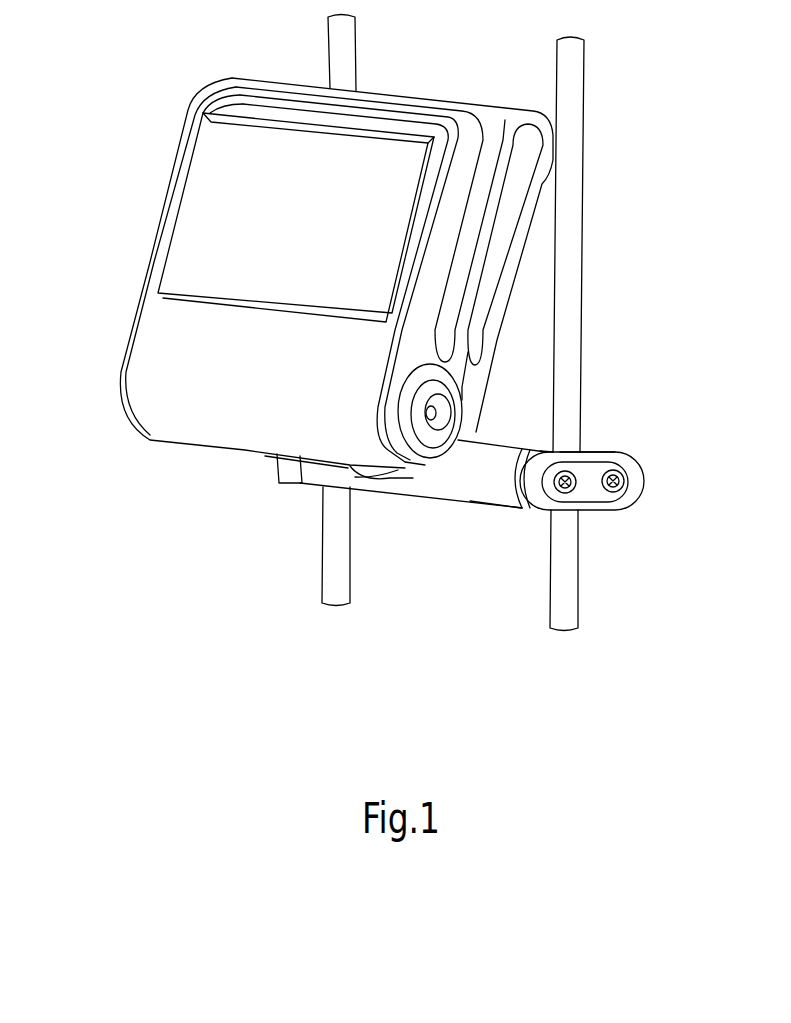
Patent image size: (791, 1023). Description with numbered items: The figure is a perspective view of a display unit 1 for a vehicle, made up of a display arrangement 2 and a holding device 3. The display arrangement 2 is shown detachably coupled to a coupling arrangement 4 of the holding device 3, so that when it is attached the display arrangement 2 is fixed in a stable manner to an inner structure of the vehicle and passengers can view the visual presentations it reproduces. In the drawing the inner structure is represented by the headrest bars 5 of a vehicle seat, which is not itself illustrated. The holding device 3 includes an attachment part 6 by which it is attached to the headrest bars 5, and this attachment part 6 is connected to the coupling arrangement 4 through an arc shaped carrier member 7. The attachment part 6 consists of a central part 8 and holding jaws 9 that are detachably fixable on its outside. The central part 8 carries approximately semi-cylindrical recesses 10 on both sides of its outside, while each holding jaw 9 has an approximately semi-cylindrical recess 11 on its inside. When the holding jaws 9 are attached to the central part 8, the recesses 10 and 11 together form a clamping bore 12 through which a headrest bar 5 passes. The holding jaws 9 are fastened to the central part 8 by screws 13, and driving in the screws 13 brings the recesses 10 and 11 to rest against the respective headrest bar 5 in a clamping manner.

The display unit 1 is at (92, 472).
The display arrangement 2 is at (134, 231).
The holding device 3 is at (434, 519).
The coupling arrangement 4 is at (481, 385).
The headrest bars 5 is at (577, 283).
The attachment part 6 is at (482, 521).
The arc shaped carrier member 7 is at (388, 482).
The central part 8 is at (518, 498).
The holding jaws 9 is at (621, 457).
The semi-cylindrical recesses 10 is at (545, 430).
The semi-cylindrical recesses 11 is at (612, 442).
The clamping bore 12 is at (594, 433).
The screws 13 is at (624, 481).